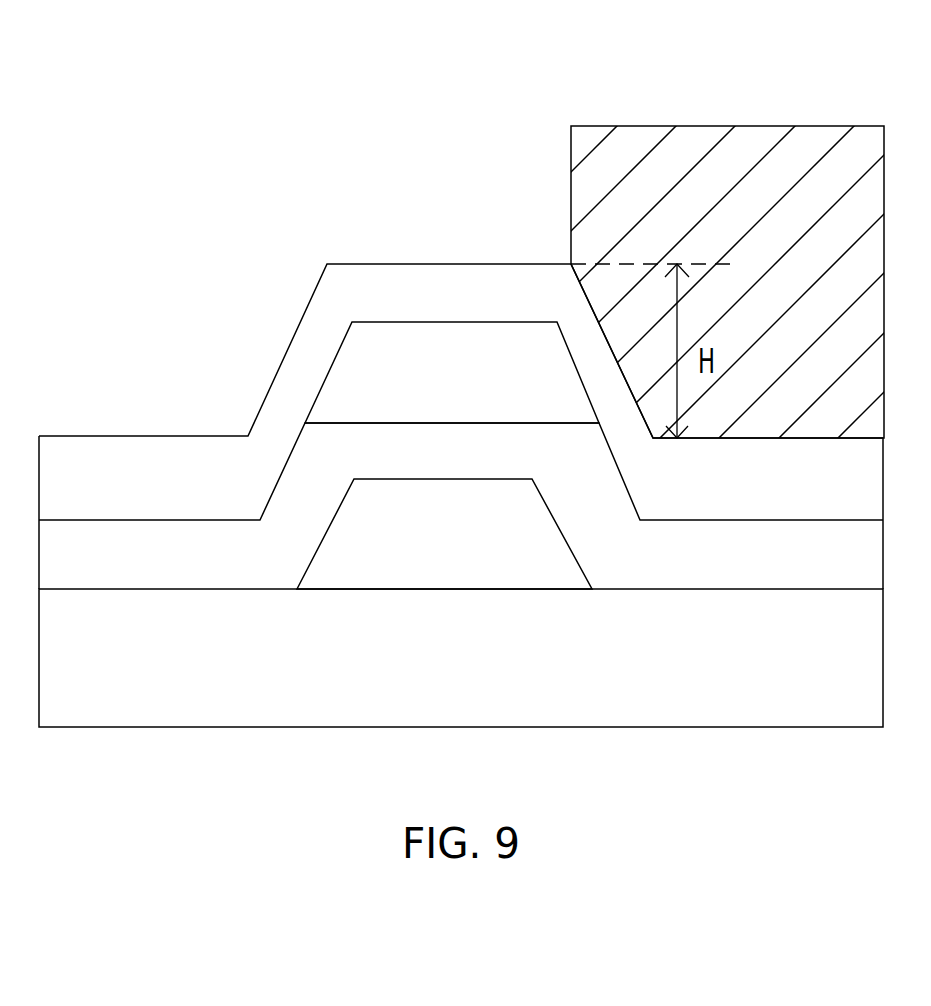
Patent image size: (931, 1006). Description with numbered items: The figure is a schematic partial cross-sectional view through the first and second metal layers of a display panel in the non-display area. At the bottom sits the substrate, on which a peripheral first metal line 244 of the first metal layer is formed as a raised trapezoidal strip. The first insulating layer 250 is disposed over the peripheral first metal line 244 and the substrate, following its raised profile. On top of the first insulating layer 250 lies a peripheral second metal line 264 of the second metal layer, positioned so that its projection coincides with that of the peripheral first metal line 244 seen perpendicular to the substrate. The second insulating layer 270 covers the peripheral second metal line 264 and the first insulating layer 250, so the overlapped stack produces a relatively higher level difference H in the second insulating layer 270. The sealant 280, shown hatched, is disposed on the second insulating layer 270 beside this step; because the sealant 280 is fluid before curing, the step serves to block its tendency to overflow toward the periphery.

The peripheral first metal line 244 is at (442, 563).
The first insulating layer 250 is at (85, 557).
The peripheral second metal line 264 is at (430, 350).
The second insulating layer 270 is at (163, 462).
The sealant 280 is at (740, 162).